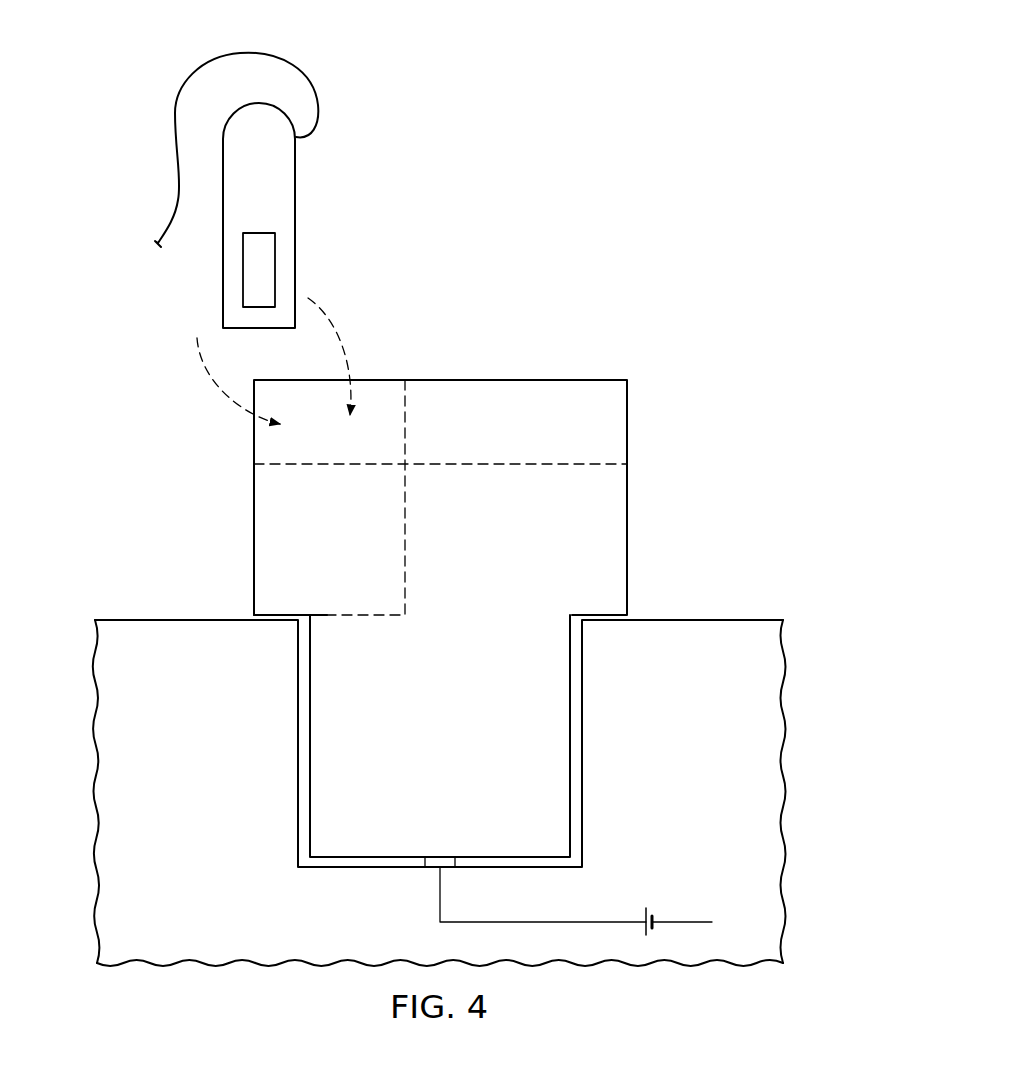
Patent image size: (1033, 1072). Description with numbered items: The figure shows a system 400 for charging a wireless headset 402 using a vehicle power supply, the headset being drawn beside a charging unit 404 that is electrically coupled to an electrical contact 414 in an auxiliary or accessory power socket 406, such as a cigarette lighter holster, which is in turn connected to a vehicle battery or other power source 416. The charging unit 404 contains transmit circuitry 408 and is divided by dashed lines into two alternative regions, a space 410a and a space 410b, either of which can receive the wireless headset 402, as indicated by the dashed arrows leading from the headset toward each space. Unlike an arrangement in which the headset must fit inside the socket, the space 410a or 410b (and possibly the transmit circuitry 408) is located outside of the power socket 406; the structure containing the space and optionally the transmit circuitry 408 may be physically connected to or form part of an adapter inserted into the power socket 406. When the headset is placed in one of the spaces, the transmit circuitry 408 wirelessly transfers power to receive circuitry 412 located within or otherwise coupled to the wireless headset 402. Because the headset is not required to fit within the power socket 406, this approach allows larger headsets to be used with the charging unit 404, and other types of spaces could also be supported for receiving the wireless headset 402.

The system 400 is at (636, 117).
The wireless headset 402 is at (297, 213).
The charging unit 404 is at (482, 376).
The power socket 406 is at (590, 744).
The transmit circuitry 408 is at (610, 510).
The space 410a is at (355, 599).
The space 410b is at (550, 420).
The receive circuitry 412 is at (243, 267).
The electrical contact 414 is at (446, 856).
The power source 416 is at (648, 906).